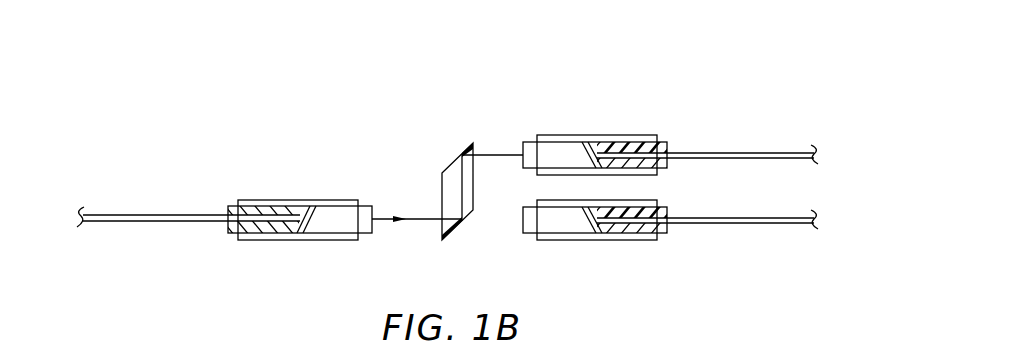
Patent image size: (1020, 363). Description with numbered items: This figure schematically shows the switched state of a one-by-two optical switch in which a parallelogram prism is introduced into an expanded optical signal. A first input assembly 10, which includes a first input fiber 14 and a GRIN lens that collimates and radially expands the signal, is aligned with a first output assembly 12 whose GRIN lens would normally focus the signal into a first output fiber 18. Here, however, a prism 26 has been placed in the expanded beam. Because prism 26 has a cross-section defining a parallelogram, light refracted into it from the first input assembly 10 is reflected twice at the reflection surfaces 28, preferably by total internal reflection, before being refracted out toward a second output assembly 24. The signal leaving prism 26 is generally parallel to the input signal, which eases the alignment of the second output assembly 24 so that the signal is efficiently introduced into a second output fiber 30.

The first input assembly 10 is at (271, 199).
The first output assembly 12 is at (593, 243).
The first input fiber 14 is at (114, 214).
The first output fiber 18 is at (748, 218).
The second output assembly 24 is at (602, 134).
The prism 26 is at (442, 186).
The reflection surfaces 28 is at (467, 146).
The second output fiber 30 is at (748, 153).